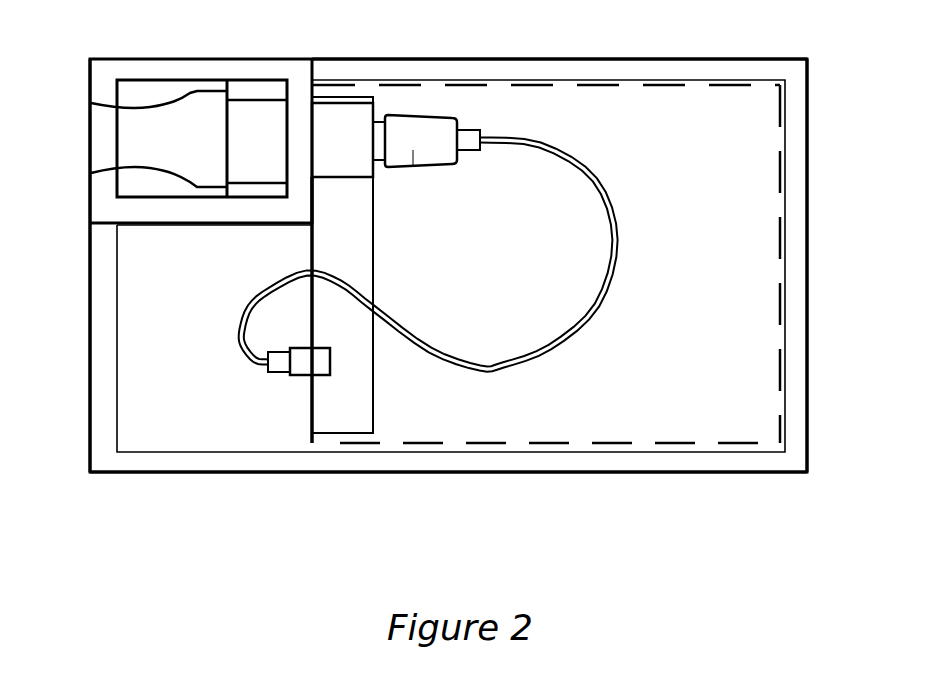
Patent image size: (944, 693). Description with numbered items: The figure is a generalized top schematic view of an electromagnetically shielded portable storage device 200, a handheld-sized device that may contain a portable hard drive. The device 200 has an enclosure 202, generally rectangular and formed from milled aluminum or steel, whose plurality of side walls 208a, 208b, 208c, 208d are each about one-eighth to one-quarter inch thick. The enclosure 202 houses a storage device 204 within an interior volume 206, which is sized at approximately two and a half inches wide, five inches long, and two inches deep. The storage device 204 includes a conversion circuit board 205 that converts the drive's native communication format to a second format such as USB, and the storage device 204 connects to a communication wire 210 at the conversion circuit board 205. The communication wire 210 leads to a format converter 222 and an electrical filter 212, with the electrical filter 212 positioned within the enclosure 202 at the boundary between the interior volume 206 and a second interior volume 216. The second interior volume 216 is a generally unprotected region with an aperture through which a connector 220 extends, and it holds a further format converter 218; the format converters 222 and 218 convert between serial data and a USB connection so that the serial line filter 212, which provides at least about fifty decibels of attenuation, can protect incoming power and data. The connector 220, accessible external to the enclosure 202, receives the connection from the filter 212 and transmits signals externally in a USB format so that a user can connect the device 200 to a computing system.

The electromagnetically shielded portable storage device 200 is at (168, 536).
The enclosure 202 is at (343, 486).
The storage device 204 is at (730, 192).
The conversion circuit board 205 is at (356, 222).
The interior volume 206 is at (205, 424).
The side wall 208a is at (488, 72).
The side wall 208b is at (565, 462).
The side wall 208c is at (792, 287).
The side wall 208d is at (100, 292).
The communication wire 210 is at (598, 180).
The electrical filter 212 is at (276, 151).
The second interior volume 216 is at (163, 100).
The format converter 218 is at (206, 151).
The connector 220 is at (89, 142).
The format converter 222 is at (363, 149).